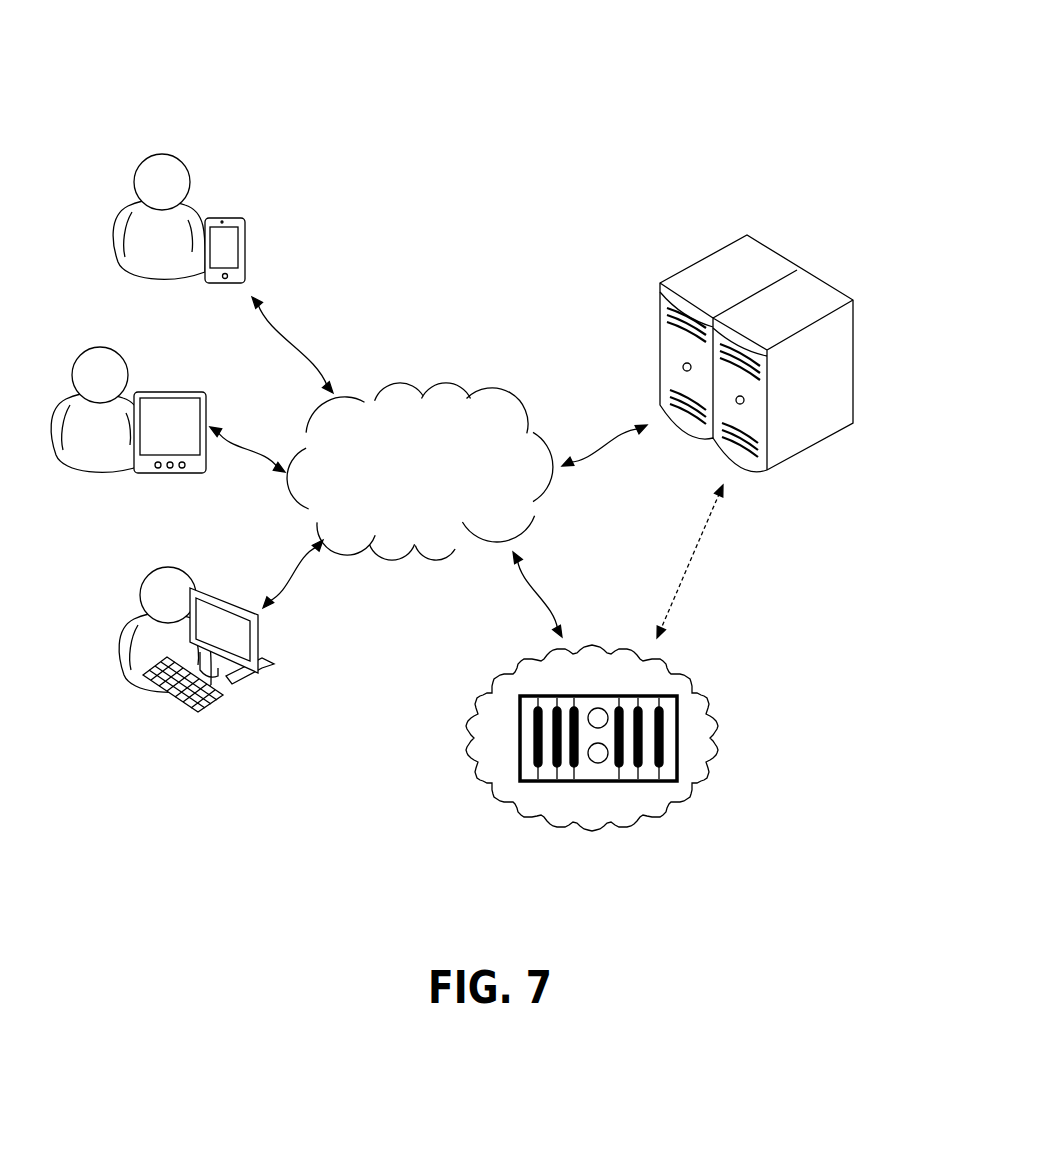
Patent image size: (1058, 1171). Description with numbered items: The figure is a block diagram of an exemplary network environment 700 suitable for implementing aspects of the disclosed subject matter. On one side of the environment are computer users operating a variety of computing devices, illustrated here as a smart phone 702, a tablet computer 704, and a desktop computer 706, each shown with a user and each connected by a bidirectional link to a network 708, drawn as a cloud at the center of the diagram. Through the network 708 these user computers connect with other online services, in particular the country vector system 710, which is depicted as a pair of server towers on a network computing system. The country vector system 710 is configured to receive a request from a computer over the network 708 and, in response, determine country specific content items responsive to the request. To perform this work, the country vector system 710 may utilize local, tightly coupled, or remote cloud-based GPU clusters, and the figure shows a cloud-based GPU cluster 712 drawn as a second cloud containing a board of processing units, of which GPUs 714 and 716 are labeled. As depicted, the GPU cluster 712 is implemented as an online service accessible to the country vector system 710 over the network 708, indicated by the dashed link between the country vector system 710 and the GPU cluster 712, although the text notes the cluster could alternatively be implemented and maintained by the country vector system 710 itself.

The network environment 700 is at (588, 97).
The smart phone 702 is at (217, 218).
The tablet computer 704 is at (163, 390).
The desktop computer 706 is at (210, 580).
The network 708 is at (403, 497).
The country vector system 710 is at (812, 272).
The cloud-based GPU cluster 712 is at (622, 737).
The GPU 714 is at (532, 782).
The GPU 716 is at (633, 782).